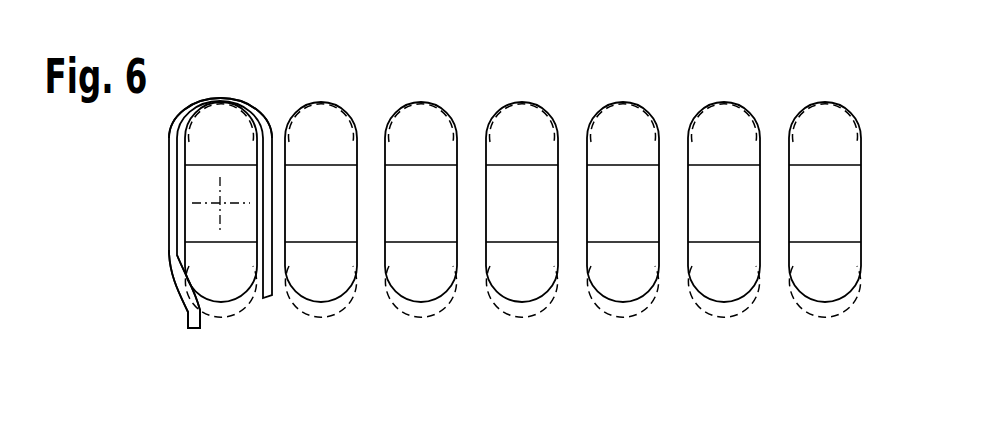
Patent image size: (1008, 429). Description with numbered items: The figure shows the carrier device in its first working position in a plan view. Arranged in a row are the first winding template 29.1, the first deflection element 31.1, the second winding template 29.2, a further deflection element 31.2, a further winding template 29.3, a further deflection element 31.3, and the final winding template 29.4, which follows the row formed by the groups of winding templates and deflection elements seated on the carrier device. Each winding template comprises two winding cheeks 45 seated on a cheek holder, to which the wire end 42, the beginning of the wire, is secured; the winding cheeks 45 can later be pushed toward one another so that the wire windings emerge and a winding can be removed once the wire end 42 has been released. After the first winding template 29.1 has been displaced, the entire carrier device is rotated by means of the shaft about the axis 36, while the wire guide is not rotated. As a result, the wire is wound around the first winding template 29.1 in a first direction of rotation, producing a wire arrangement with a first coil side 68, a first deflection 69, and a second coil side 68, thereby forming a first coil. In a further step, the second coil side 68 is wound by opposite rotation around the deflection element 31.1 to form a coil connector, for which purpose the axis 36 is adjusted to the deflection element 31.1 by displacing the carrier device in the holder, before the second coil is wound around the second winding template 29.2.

The first winding template 29.1 is at (219, 312).
The deflection element 31.1 is at (319, 312).
The second winding template 29.2 is at (419, 312).
The deflection element 31.2 is at (520, 312).
The winding template 29.3 is at (621, 312).
The deflection element 31.3 is at (722, 312).
The final winding template 29.4 is at (823, 312).
The axis 36 is at (219, 204).
The wire end 42 is at (187, 317).
The winding cheeks 45 is at (213, 147).
The coil side 68 is at (171, 190).
The first deflection 69 is at (219, 96).